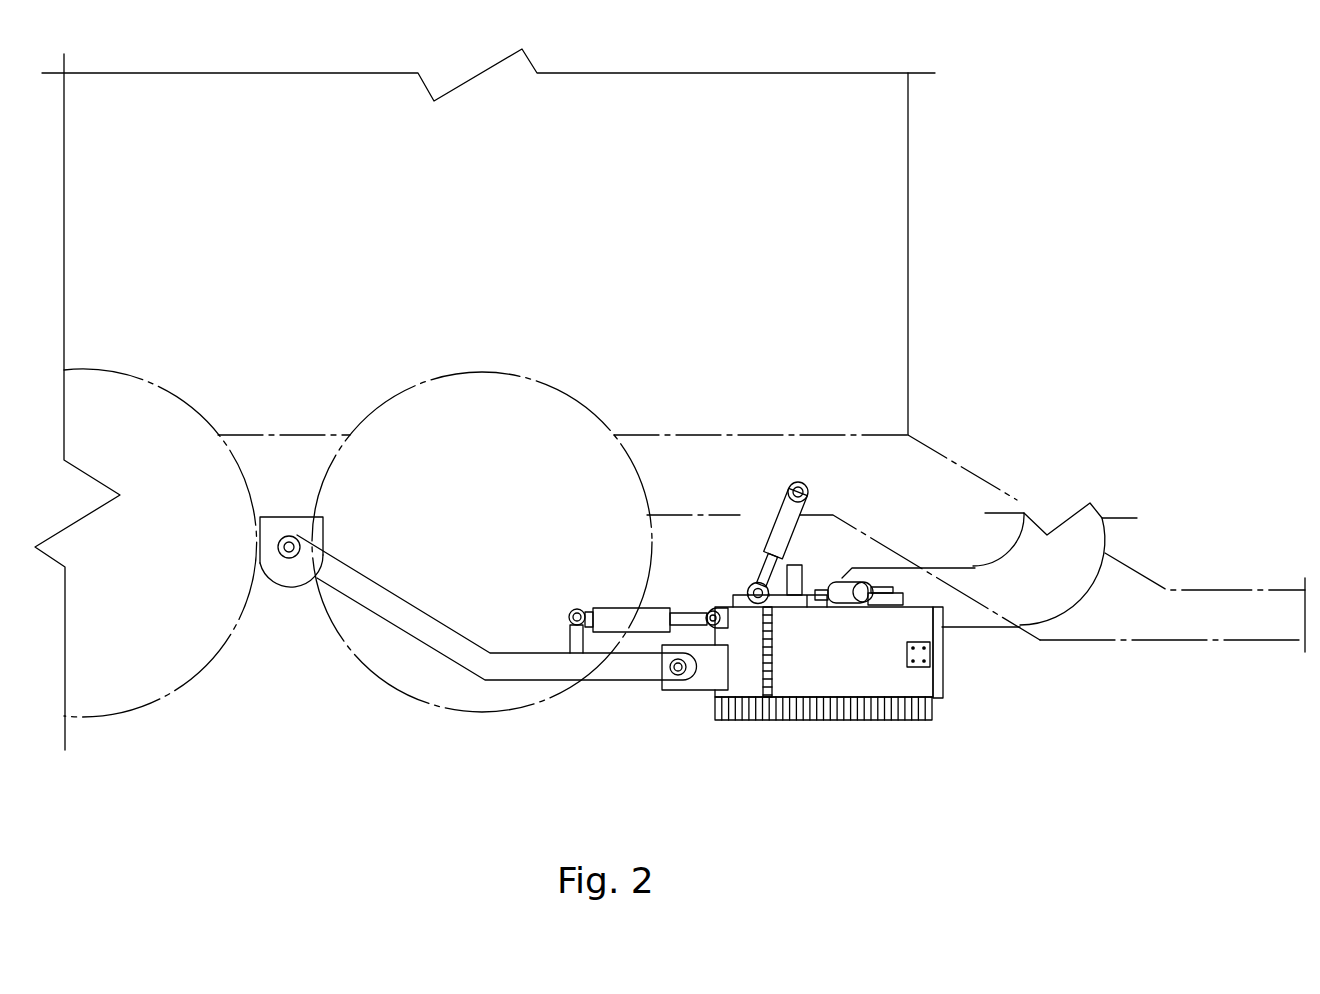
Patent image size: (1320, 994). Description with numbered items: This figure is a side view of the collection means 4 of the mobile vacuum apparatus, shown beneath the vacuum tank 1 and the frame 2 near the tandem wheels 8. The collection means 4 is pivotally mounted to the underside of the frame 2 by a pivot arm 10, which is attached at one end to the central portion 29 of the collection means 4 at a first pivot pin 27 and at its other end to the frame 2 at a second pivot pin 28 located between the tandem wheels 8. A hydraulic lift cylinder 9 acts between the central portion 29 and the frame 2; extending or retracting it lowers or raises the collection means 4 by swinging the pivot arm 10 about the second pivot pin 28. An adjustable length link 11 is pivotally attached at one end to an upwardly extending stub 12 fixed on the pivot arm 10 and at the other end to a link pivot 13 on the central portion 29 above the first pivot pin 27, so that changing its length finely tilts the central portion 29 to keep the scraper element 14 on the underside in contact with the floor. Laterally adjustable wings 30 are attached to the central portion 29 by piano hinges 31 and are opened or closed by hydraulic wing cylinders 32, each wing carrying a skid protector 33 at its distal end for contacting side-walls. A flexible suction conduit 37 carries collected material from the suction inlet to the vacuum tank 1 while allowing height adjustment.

The vacuum tank 1 is at (890, 298).
The frame 2 is at (1176, 630).
The collection means 4 is at (878, 654).
The tandem wheels 8 is at (177, 668).
The hydraulic lift cylinder 9 is at (780, 533).
The pivot arm 10 is at (428, 635).
The adjustable length link 11 is at (647, 620).
The upwardly extending stub 12 is at (567, 630).
The link pivot 13 is at (715, 612).
The scraper element 14 is at (755, 712).
The first pivot pin 27 is at (675, 675).
The second pivot pin 28 is at (288, 556).
The central portion 29 is at (740, 683).
The laterally adjustable wings 30 is at (823, 682).
The piano hinge 31 is at (770, 682).
The hydraulic wing cylinder 32 is at (838, 590).
The skid protector 33 is at (937, 685).
The flexible suction conduit 37 is at (990, 580).